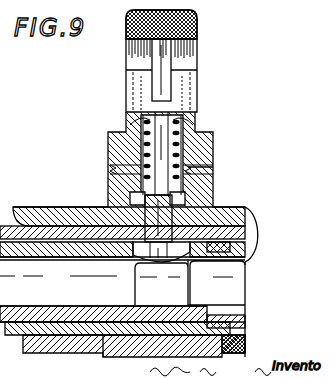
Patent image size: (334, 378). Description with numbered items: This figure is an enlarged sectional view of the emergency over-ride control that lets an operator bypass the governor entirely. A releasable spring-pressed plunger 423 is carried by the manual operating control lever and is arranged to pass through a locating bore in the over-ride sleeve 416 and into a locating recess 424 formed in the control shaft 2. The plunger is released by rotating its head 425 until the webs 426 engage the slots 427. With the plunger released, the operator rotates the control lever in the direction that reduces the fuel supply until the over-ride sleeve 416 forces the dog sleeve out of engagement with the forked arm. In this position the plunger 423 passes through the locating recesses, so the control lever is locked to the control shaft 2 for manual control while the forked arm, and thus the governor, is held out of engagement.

The control shaft 2 is at (3, 250).
The over-ride sleeve 416 is at (30, 232).
The spring-pressed plunger 423 is at (160, 217).
The locating recess 424 is at (158, 258).
The head 425 is at (197, 26).
The webs 426 is at (183, 62).
The slots 427 is at (160, 78).